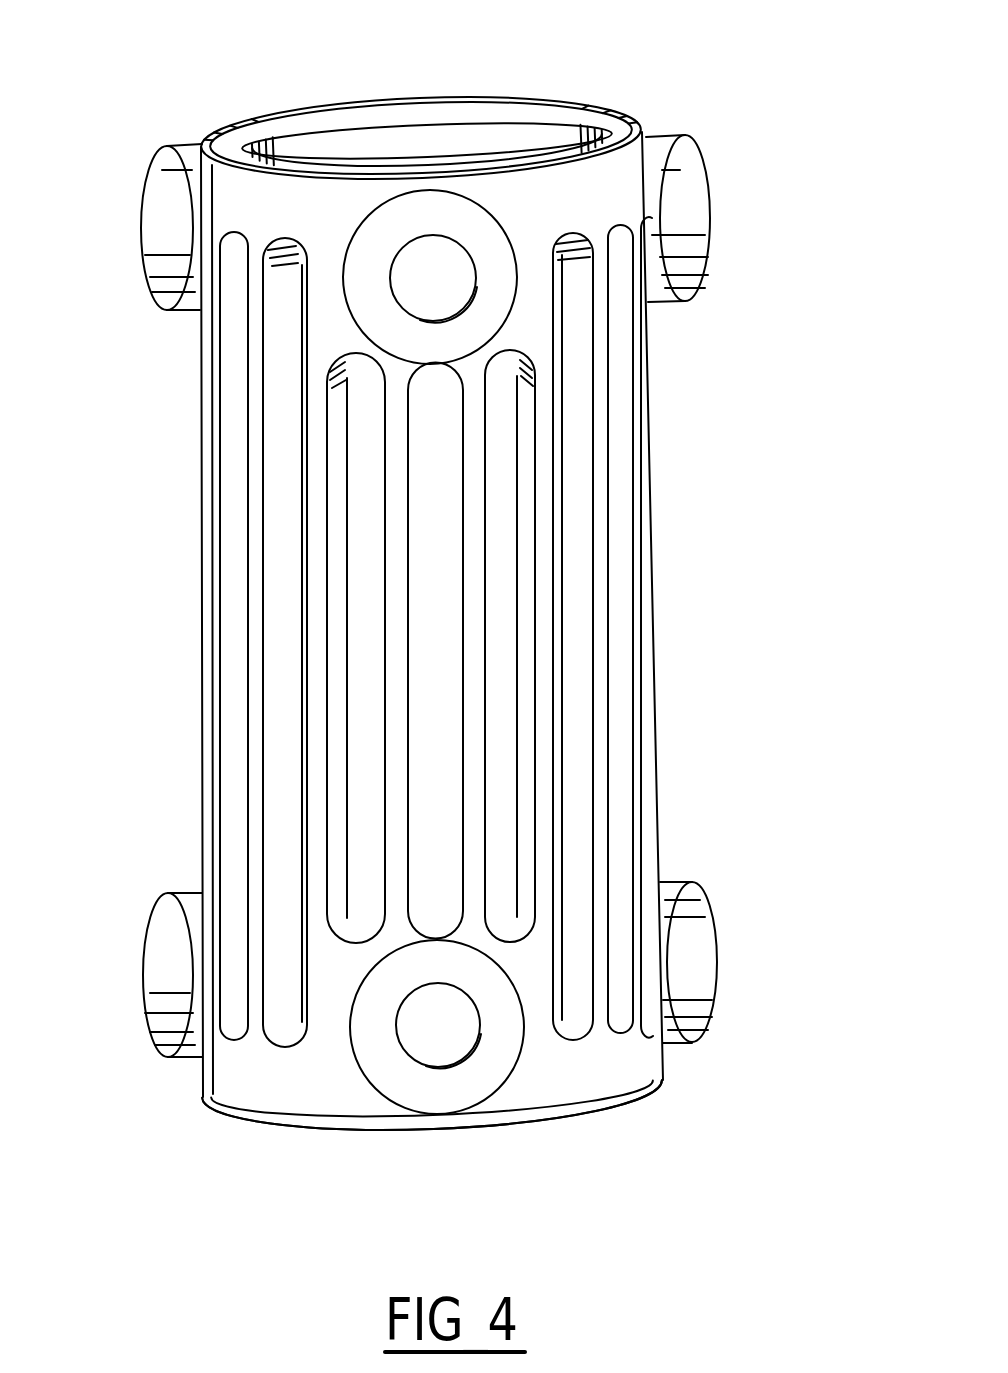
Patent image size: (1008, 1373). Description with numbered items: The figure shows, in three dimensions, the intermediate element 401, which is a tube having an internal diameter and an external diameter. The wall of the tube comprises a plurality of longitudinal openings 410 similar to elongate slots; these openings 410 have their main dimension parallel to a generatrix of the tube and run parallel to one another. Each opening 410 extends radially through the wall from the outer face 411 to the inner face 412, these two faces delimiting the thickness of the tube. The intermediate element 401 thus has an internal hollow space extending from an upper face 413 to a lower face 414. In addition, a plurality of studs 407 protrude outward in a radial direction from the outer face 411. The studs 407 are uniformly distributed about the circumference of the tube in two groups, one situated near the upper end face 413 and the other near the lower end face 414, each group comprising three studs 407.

The intermediate element 401 is at (250, 1078).
The studs 407 is at (688, 194).
The longitudinal openings 410 is at (418, 797).
The outer face 411 is at (576, 1081).
The inner face 412 is at (458, 131).
The upper face 413 is at (622, 122).
The lower face 414 is at (430, 1142).